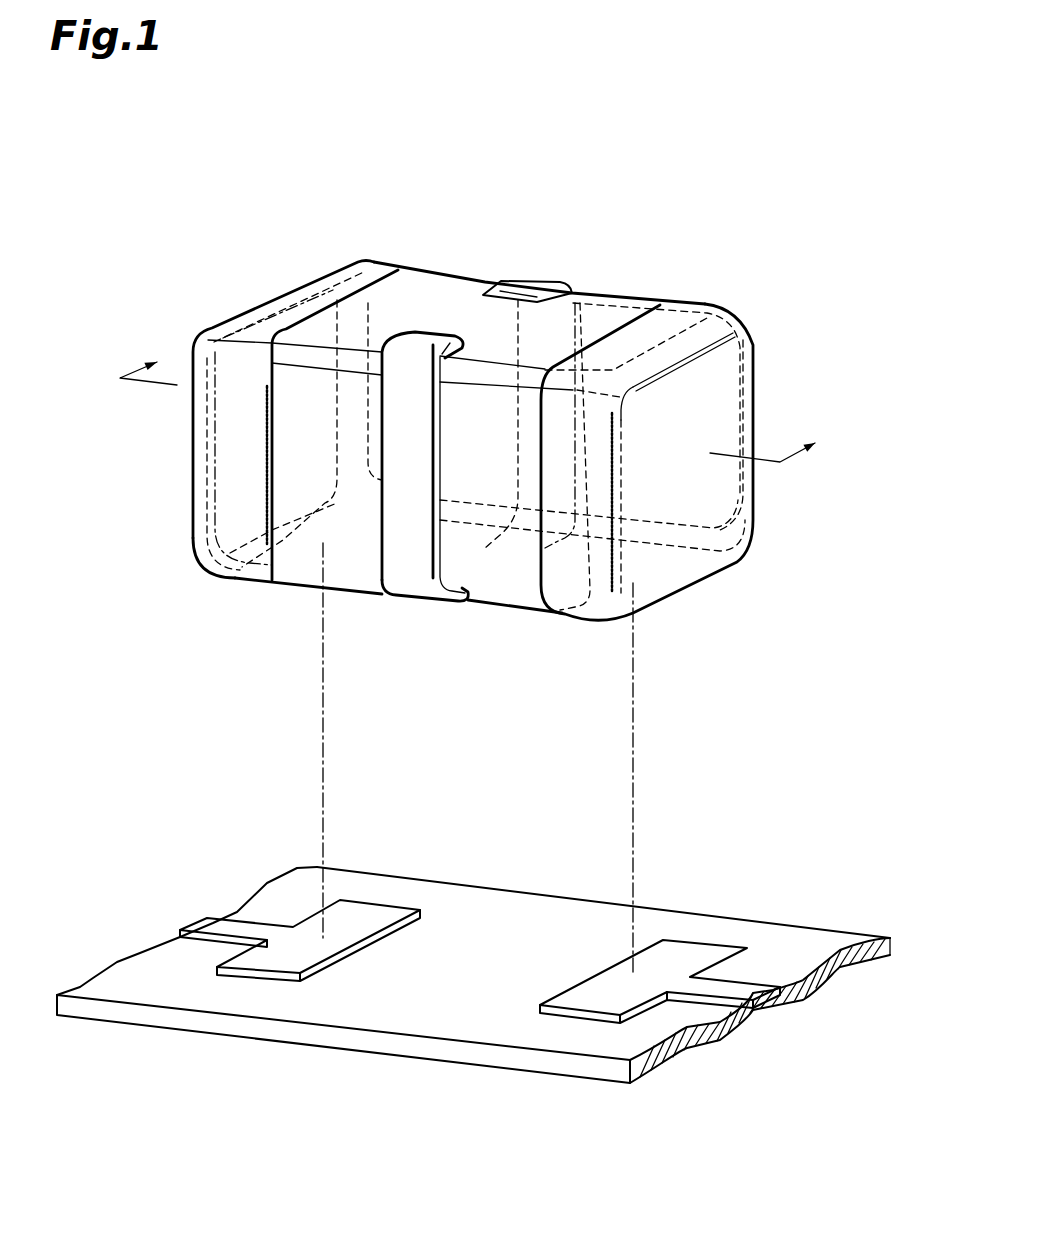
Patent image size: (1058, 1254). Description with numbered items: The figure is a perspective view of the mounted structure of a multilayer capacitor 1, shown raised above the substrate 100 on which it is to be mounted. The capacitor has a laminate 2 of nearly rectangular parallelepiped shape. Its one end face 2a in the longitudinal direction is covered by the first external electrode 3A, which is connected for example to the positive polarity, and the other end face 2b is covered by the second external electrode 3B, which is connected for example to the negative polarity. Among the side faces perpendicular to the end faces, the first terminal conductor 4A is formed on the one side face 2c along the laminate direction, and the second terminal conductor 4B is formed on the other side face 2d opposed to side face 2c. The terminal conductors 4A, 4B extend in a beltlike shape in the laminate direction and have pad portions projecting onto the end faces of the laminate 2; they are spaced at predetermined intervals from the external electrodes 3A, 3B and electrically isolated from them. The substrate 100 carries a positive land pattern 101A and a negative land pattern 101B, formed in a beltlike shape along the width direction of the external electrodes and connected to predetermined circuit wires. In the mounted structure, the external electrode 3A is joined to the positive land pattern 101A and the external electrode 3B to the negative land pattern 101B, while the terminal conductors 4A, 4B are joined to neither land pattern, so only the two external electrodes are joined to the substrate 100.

The multilayer capacitor 1 is at (760, 231).
The laminate 2 is at (420, 272).
The one end face 2a is at (240, 439).
The other end face 2b is at (713, 494).
The one side face 2c is at (298, 572).
The other side face 2d is at (447, 318).
The first external electrode 3A is at (208, 322).
The second external electrode 3B is at (765, 368).
The first terminal conductor 4A is at (402, 575).
The second terminal conductor 4B is at (532, 280).
The substrate 100 is at (793, 940).
The positive land pattern 101A is at (373, 913).
The negative land pattern 101B is at (700, 950).